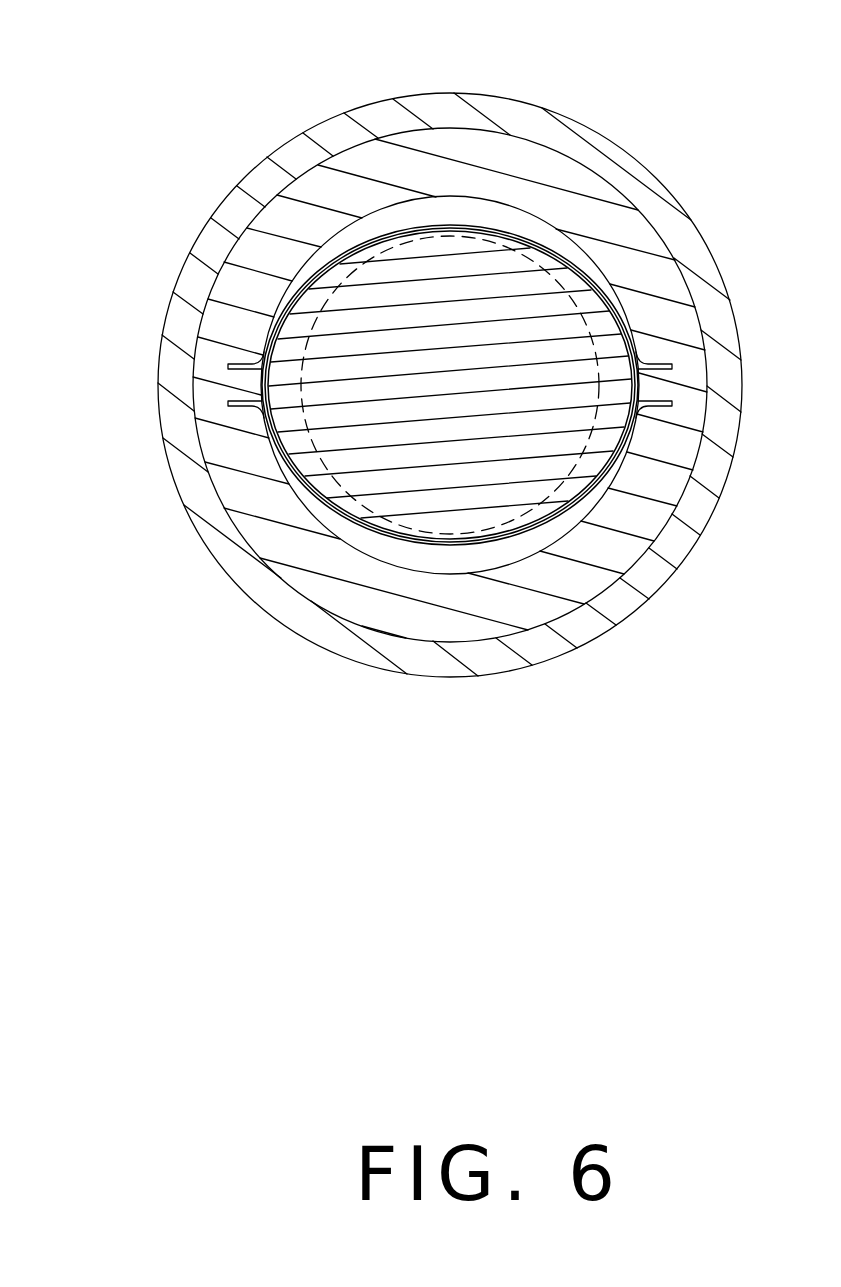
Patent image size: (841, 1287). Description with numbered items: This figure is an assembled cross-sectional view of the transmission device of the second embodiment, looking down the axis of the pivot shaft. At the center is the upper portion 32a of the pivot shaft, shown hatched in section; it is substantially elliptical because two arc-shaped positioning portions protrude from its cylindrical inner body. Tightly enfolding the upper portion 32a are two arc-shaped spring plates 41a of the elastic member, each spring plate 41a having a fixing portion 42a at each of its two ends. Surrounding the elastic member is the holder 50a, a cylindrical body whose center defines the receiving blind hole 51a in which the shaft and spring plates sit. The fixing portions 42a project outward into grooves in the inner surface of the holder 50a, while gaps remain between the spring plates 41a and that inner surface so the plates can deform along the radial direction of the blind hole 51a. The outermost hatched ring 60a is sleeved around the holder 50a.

The outer sleeve 60a is at (318, 137).
The holder 50a is at (430, 172).
The receiving blind hole 51a is at (481, 207).
The spring plate 41a is at (373, 530).
The fixing portion 42a is at (240, 408).
The upper portion 32a is at (490, 477).